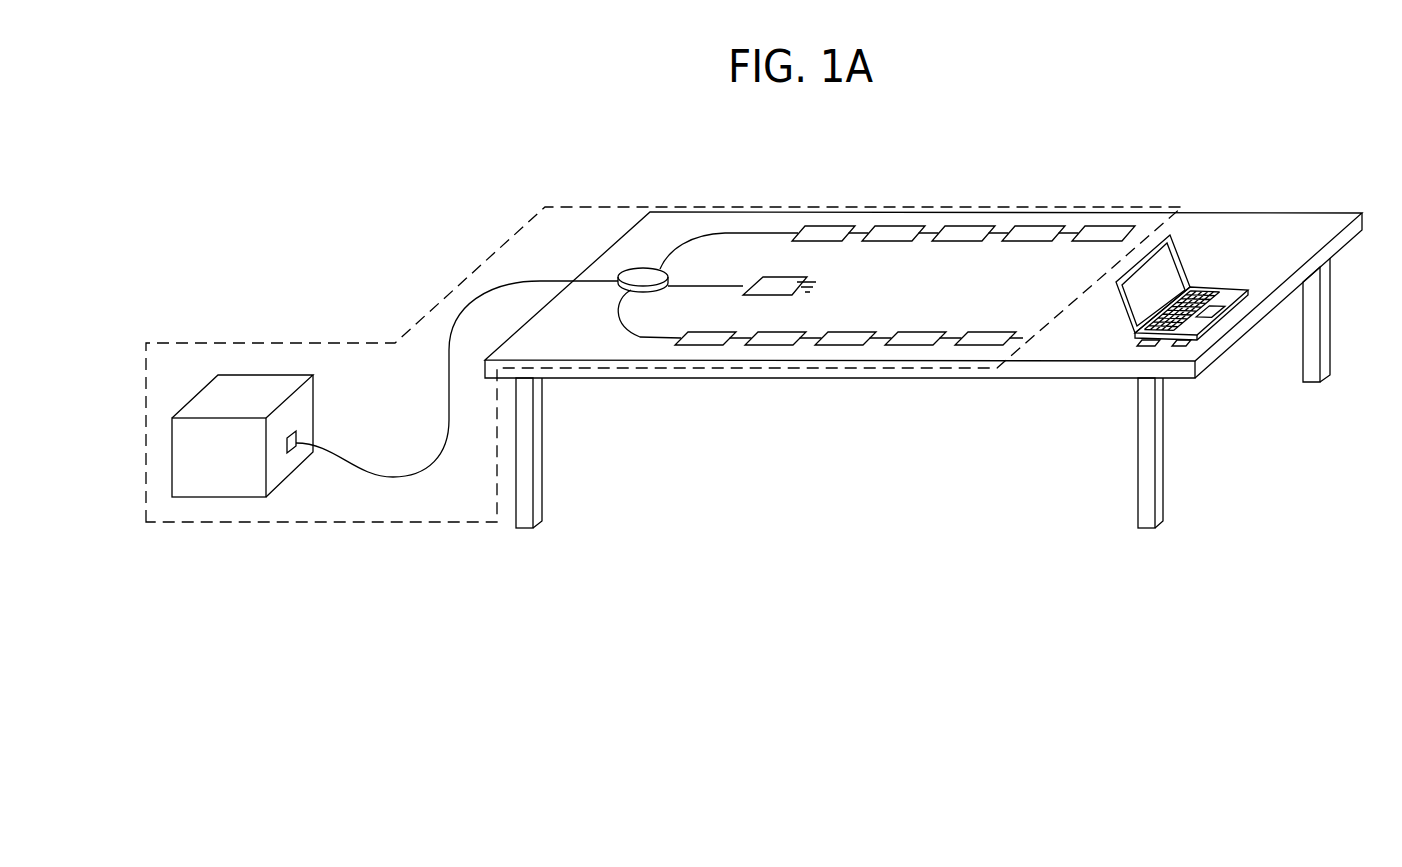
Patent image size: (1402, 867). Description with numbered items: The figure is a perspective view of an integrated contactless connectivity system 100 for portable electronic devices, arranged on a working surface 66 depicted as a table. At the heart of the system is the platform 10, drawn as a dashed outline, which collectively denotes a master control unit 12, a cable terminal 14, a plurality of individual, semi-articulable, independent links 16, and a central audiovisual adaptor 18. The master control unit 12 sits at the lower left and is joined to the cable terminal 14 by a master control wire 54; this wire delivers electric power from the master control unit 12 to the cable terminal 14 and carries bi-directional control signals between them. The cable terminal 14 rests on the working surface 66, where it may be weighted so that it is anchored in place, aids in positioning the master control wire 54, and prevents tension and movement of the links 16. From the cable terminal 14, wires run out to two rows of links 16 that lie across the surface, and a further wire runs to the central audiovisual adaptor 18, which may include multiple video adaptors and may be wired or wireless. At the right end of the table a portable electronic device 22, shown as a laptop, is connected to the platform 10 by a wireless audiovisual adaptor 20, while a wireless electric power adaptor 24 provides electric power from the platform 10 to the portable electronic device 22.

The integrated contactless connectivity system 100 is at (490, 143).
The platform 10 is at (367, 382).
The master control unit 12 is at (230, 473).
The cable terminal 14 is at (637, 276).
The links 16 is at (693, 342).
The central audiovisual adaptor 18 is at (799, 278).
The wireless audiovisual adaptor 20 is at (1180, 327).
The portable electronic device 22 is at (1227, 297).
The wireless electric power adaptor 24 is at (1187, 342).
The master control wire 54 is at (393, 477).
The working surface 66 is at (1265, 230).